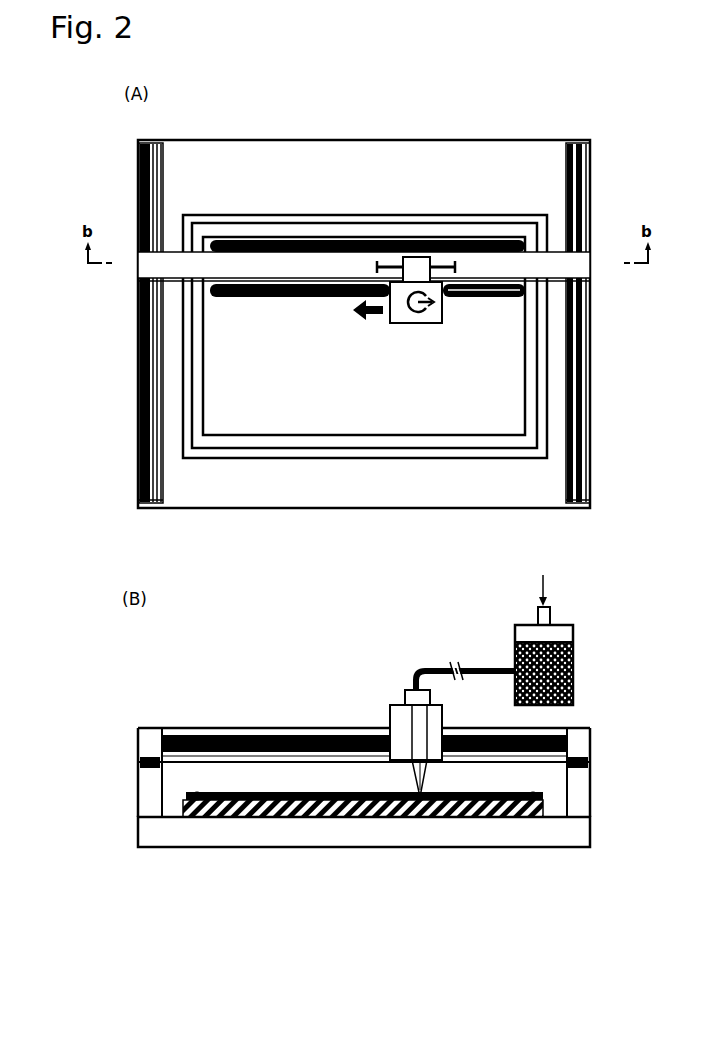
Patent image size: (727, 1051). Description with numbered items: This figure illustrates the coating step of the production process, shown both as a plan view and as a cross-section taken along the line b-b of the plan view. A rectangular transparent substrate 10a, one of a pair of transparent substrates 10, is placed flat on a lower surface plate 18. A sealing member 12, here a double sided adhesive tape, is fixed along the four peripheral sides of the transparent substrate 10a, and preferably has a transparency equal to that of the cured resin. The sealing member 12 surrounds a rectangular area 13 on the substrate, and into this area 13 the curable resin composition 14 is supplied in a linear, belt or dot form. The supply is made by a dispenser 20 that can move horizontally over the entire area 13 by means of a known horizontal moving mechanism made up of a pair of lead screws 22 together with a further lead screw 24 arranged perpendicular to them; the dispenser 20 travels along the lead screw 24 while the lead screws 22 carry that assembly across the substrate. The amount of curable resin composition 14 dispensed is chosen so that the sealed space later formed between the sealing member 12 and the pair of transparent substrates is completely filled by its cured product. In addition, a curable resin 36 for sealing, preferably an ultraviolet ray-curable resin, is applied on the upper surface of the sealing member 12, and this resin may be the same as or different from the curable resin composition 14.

The transparent substrate 10 is at (443, 214).
The transparent substrate 10a is at (329, 818).
The sealing member 12 is at (487, 234).
The rectangular area 13 is at (390, 378).
The curable resin composition 14 is at (320, 239).
The lower surface plate 18 is at (415, 140).
The dispenser 20 is at (422, 326).
The lead screw 22 is at (163, 205).
The lead screw 24 is at (458, 304).
The curable resin for sealing 36 is at (194, 795).